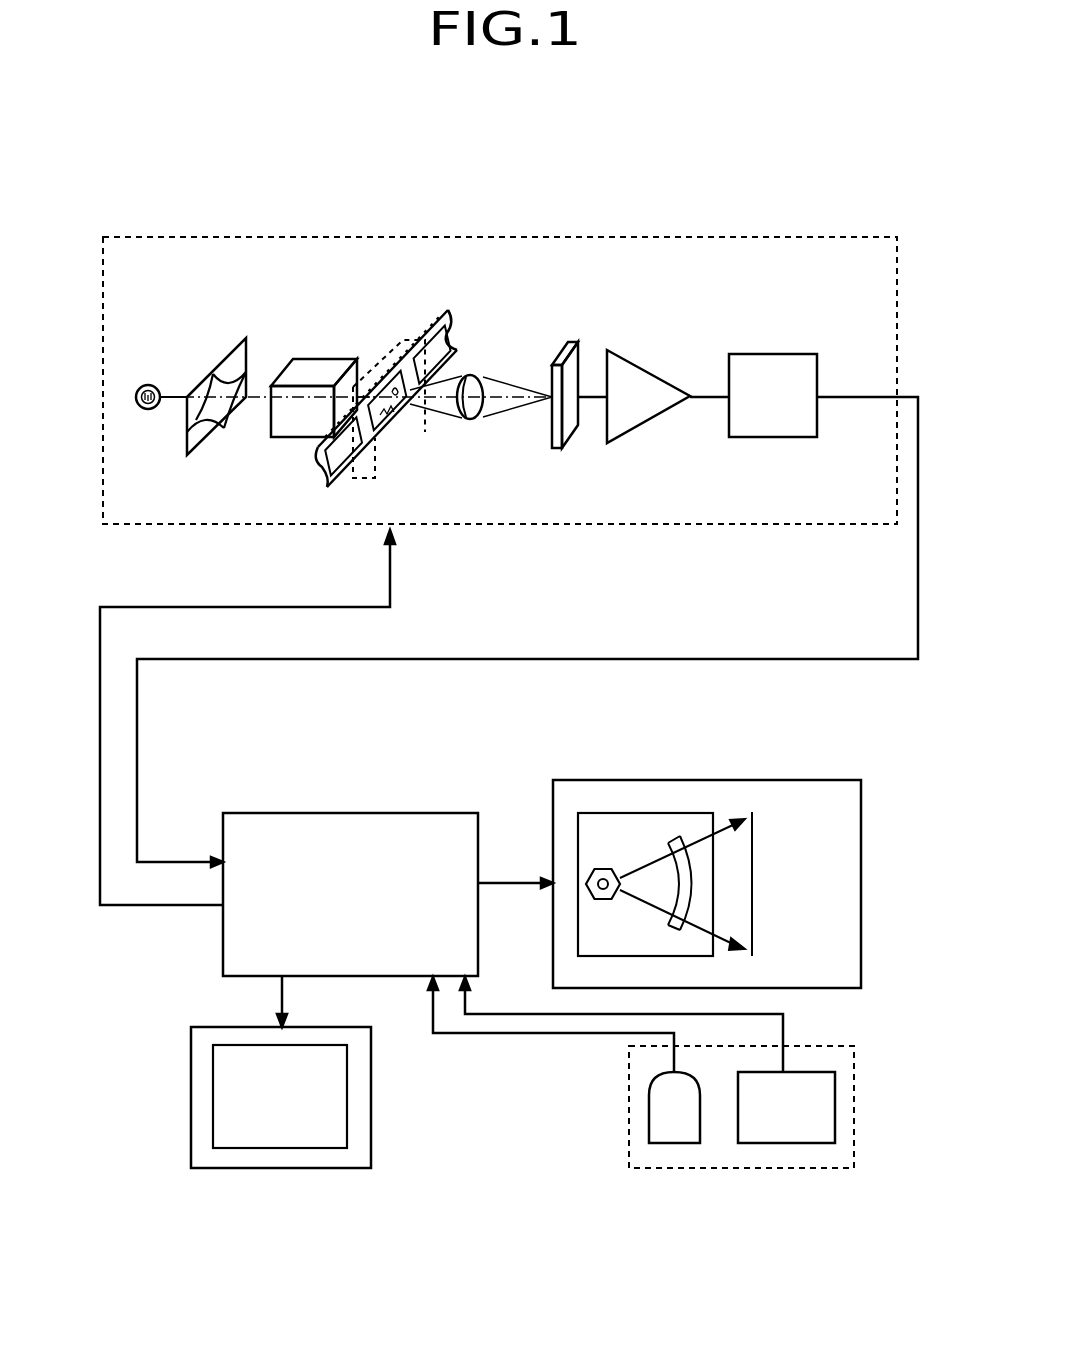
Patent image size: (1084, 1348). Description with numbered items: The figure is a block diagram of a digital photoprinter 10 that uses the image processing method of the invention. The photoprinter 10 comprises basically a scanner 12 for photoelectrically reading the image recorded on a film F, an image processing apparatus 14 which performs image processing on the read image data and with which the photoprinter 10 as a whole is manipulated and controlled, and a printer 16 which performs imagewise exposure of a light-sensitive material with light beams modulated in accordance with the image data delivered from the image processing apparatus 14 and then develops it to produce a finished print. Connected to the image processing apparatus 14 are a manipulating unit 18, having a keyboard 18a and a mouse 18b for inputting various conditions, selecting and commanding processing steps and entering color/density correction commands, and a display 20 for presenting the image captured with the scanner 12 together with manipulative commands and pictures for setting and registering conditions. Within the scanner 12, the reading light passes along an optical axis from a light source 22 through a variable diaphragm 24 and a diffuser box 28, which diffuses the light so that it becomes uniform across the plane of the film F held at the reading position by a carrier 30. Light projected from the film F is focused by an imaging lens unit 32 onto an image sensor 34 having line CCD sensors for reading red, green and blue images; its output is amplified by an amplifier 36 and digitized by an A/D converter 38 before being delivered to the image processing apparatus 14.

The photoprinter 10 is at (768, 203).
The scanner 12 is at (323, 237).
The image processing apparatus 14 is at (347, 813).
The printer 16 is at (702, 780).
The manipulating unit 18 is at (740, 1156).
The keyboard 18a is at (788, 1143).
The mouse 18b is at (668, 1143).
The display 20 is at (270, 1170).
The light source 22 is at (150, 385).
The variable diaphragm 24 is at (222, 362).
The diffuser box 28 is at (318, 380).
The carrier 30 is at (410, 440).
The imaging lens unit 32 is at (470, 376).
The image sensor 34 is at (574, 368).
The amplifier 36 is at (652, 418).
The A/D converter 38 is at (785, 366).
The film F is at (440, 320).